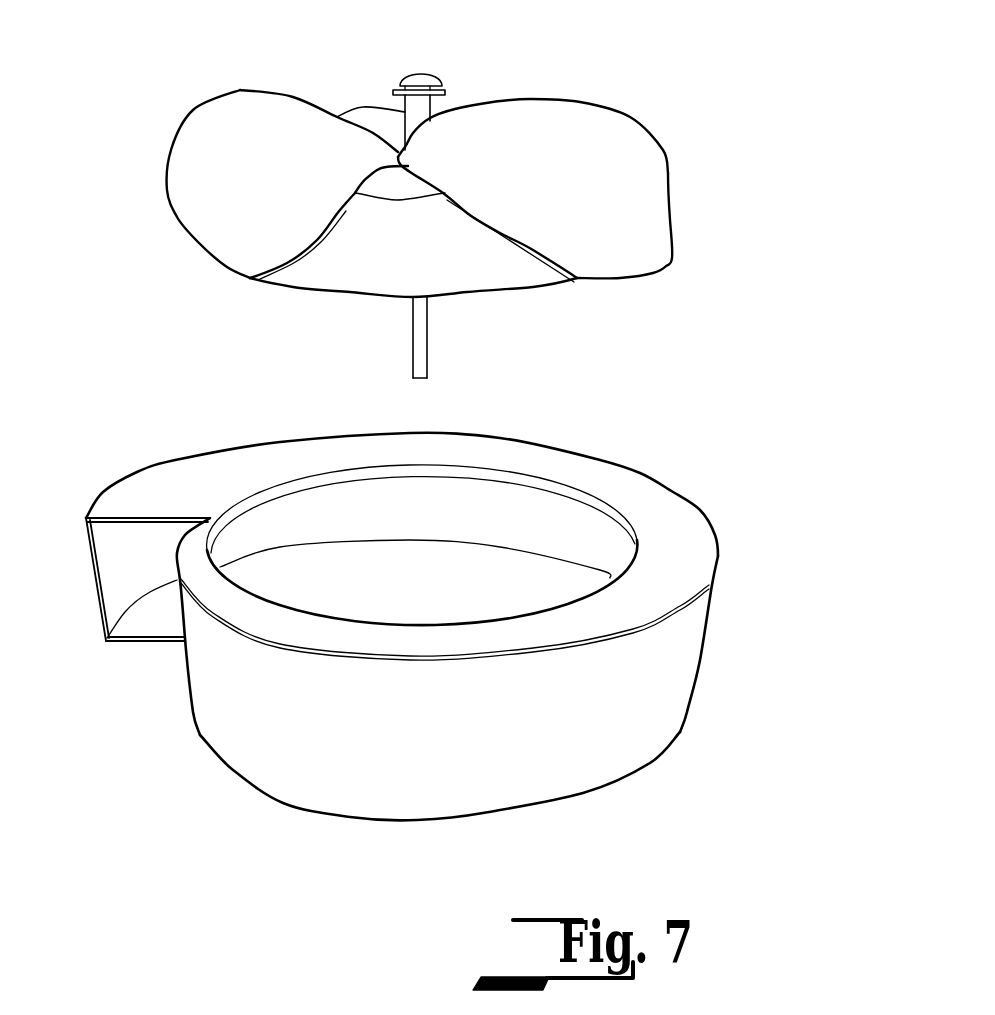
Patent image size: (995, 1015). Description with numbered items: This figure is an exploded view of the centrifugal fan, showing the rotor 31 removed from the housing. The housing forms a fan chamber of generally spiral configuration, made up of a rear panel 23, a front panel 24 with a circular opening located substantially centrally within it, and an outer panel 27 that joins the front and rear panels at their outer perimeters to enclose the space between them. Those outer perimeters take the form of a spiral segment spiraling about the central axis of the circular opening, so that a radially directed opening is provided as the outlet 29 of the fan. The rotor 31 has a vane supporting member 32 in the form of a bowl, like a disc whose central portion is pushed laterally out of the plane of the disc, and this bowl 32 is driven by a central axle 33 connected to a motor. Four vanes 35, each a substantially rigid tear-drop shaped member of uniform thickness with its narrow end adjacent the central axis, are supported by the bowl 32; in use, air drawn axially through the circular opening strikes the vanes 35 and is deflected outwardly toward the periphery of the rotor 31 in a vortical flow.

The rear panel 23 is at (323, 573).
The front panel 24 is at (605, 482).
The outer panel 27 is at (370, 594).
The outlet 29 is at (87, 571).
The rotor 31 is at (420, 195).
The vane supporting member 32 is at (497, 263).
The central axle 33 is at (437, 108).
The vanes 35 is at (607, 147).